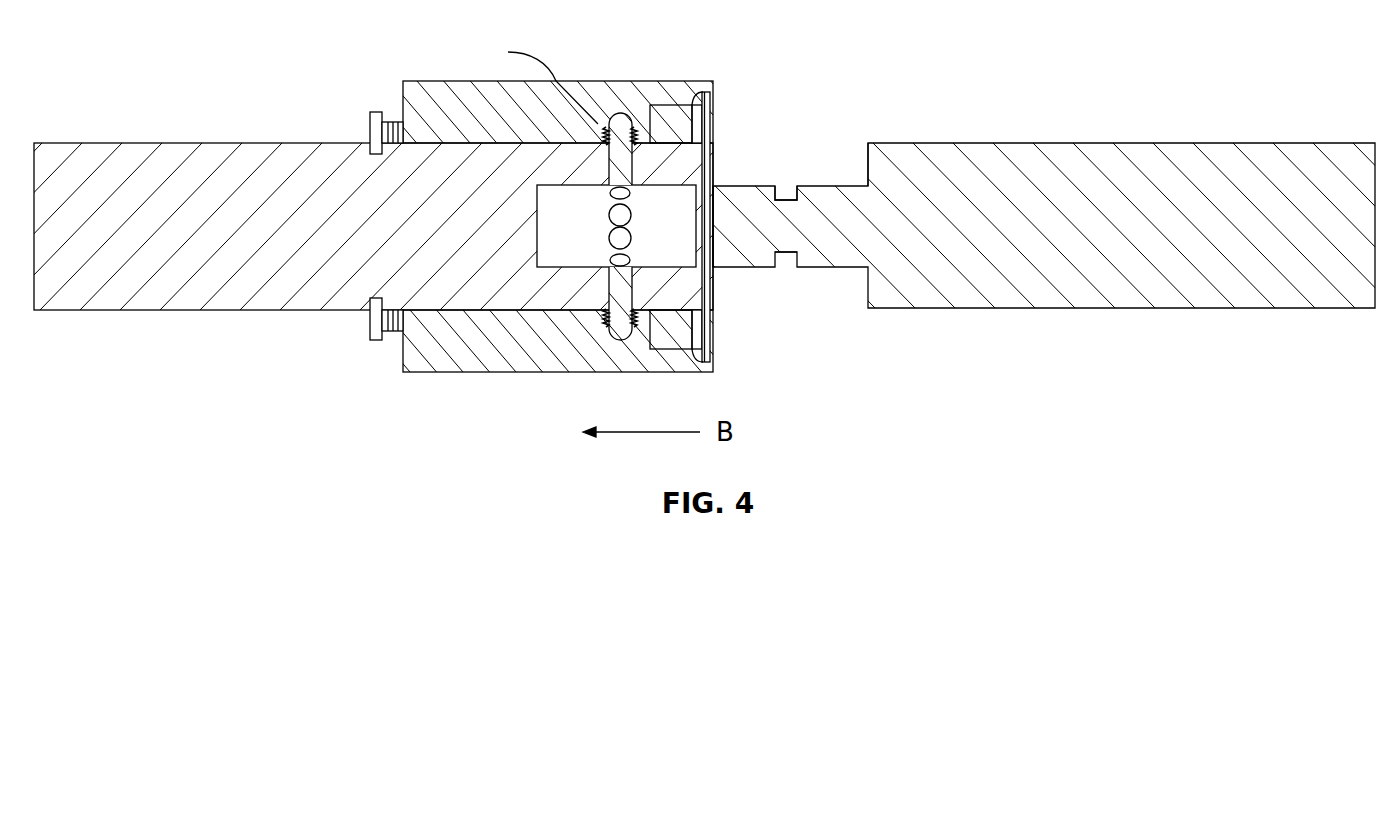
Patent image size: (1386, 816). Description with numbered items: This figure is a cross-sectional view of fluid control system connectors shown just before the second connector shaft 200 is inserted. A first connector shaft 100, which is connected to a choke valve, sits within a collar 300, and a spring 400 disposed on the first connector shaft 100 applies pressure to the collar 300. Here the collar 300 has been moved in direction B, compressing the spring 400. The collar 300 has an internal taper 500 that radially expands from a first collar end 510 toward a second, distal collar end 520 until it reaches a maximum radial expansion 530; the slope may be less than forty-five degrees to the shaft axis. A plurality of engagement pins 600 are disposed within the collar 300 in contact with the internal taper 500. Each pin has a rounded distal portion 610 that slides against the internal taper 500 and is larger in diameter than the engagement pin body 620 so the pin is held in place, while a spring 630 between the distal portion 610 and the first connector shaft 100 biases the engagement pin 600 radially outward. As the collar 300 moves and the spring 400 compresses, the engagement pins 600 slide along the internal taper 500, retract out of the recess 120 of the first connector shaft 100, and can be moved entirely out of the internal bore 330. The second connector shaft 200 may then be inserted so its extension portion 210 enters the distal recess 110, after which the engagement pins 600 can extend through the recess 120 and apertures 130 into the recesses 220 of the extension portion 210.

The first connector shaft 100 is at (120, 143).
The distal recess 110 is at (712, 150).
The recess 120 is at (712, 318).
The apertures 130 is at (614, 178).
The second connector shaft 200 is at (918, 143).
The extension portion 210 is at (798, 186).
The recesses 220 is at (779, 186).
The collar 300 is at (457, 81).
The internal bore 330 is at (372, 323).
The spring 400 is at (369, 130).
The internal taper 500 is at (529, 80).
The first collar end 510 is at (405, 372).
The second collar end 520 is at (711, 283).
The maximum radial expansion 530 is at (507, 142).
The engagement pins 600 is at (704, 107).
The distal portion 610 is at (629, 118).
The engagement pin body 620 is at (598, 172).
The spring 630 is at (707, 92).